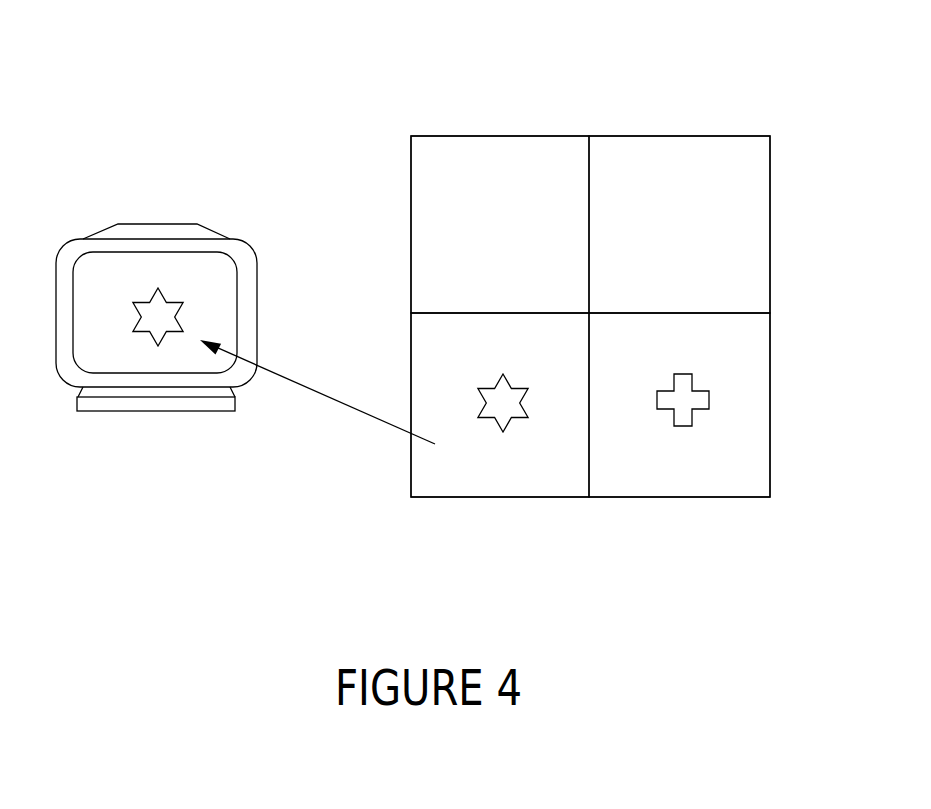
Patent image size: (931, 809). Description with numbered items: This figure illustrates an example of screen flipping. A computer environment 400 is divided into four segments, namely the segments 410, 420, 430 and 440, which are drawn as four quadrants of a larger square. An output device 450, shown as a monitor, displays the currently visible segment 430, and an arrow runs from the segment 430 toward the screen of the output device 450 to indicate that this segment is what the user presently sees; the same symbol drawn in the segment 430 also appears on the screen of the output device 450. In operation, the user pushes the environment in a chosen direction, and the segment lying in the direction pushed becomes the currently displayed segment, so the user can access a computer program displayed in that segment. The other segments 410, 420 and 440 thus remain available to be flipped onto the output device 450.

The computer environment 400 is at (442, 120).
The segment 410 is at (510, 136).
The segment 420 is at (678, 136).
The currently visible segment 430 is at (508, 497).
The segment 440 is at (690, 497).
The output device 450 is at (110, 412).